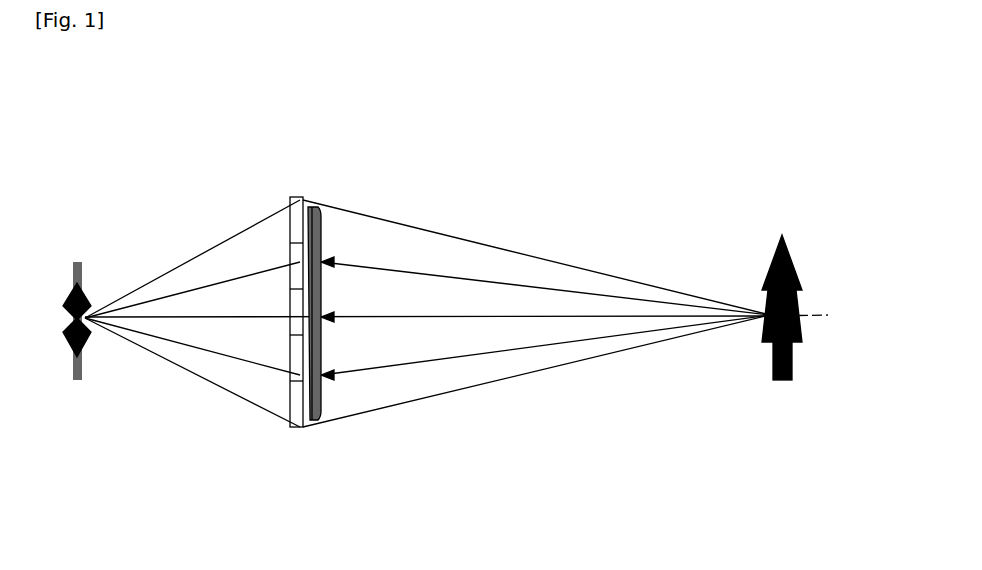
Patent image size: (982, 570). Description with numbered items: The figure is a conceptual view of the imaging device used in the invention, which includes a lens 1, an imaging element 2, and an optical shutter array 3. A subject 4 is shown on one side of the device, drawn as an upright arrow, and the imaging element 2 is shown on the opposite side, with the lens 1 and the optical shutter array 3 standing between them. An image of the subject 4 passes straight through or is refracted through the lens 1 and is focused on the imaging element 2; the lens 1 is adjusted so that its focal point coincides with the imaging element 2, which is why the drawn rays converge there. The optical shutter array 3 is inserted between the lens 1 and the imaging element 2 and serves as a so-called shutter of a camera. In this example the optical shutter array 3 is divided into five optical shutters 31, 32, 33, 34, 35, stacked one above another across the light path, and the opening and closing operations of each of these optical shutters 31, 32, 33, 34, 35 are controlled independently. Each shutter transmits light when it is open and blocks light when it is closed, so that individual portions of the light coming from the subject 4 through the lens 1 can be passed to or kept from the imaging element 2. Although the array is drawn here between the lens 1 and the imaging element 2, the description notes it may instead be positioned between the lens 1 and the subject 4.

The lens 1 is at (421, 348).
The imaging element 2 is at (88, 363).
The optical shutter array 3 is at (303, 197).
The optical shutter 31 is at (322, 210).
The optical shutter 32 is at (322, 248).
The optical shutter 33 is at (325, 322).
The optical shutter 34 is at (326, 378).
The optical shutter 35 is at (295, 405).
The subject 4 is at (795, 380).